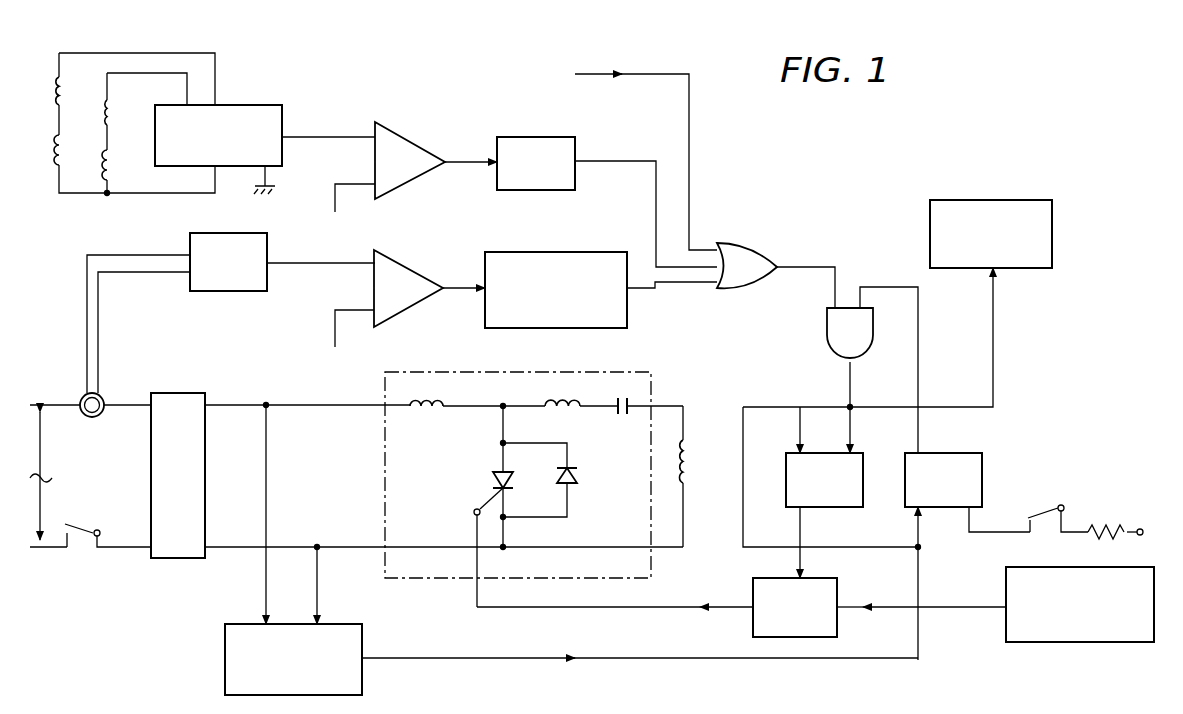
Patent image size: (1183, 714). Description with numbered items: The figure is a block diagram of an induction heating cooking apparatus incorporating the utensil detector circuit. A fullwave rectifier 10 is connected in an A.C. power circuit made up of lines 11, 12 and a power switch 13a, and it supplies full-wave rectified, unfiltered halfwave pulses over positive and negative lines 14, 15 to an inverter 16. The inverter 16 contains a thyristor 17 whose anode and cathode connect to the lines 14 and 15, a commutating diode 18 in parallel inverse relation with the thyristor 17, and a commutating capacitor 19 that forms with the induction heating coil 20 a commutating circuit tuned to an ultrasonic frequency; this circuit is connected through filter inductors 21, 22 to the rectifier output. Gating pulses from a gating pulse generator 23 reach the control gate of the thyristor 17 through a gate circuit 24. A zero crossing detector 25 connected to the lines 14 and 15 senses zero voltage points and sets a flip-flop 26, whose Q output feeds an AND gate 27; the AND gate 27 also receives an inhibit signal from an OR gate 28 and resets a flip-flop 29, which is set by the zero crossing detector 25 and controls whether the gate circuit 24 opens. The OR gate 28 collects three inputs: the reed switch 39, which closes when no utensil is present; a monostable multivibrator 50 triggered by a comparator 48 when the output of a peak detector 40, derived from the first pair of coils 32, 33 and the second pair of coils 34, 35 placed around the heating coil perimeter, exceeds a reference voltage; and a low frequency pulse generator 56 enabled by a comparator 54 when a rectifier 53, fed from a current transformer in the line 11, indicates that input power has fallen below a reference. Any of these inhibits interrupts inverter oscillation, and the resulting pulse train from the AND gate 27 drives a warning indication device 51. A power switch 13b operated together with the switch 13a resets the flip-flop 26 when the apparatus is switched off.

The fullwave rectifier 10 is at (205, 394).
The line 11 is at (127, 400).
The line 12 is at (67, 548).
The power switch 13a is at (90, 524).
The power switch 13b is at (1040, 518).
The positive line 14 is at (298, 405).
The negative line 15 is at (297, 547).
The inverter 16 is at (488, 371).
The thyristor 17 is at (493, 476).
The commutating diode 18 is at (580, 473).
The commutating capacitor 19 is at (615, 413).
The induction heating coil 20 is at (688, 450).
The filter inductor 21 is at (415, 408).
The filter inductor 22 is at (550, 410).
The gating pulse generator 23 is at (1006, 587).
The gate circuit 24 is at (838, 585).
The zero crossing detector 25 is at (362, 640).
The flip-flop 26 is at (982, 465).
The AND gate 27 is at (827, 349).
The OR gate 28 is at (752, 243).
The flip-flop 29 is at (863, 465).
The coil 32 is at (113, 108).
The coil 33 is at (115, 155).
The coil 34 is at (62, 107).
The coil 35 is at (63, 151).
The reed switch 39 is at (603, 148).
The peak detector 40 is at (252, 105).
The comparator 48 is at (410, 140).
The monostable multivibrator 50 is at (575, 142).
The warning indication device 51 is at (1000, 200).
The rectifier 53 is at (190, 238).
The comparator 54 is at (412, 262).
The low frequency pulse generator 56 is at (570, 252).